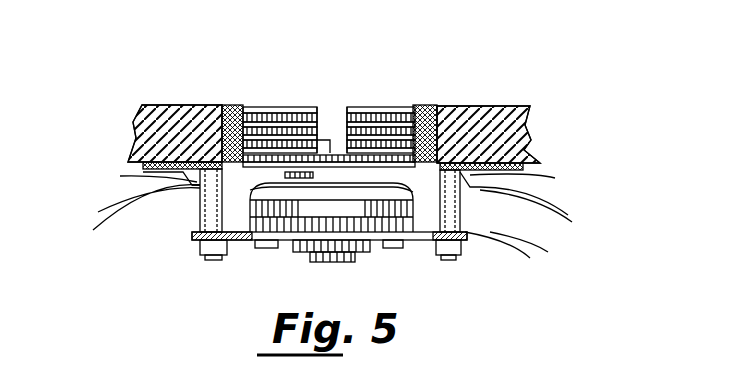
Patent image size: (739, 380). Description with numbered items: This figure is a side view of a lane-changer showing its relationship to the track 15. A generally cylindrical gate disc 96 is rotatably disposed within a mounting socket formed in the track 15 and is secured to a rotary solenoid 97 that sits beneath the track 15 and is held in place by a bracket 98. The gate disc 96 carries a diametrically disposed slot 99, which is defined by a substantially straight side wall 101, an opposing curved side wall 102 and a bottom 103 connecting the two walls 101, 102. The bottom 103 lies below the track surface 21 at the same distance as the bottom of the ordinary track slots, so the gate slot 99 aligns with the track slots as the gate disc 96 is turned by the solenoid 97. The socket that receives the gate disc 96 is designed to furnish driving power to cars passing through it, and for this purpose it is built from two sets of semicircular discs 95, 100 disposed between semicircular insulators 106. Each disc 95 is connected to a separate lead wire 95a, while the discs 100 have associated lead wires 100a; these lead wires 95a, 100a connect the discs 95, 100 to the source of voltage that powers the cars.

The track 15 is at (130, 117).
The track surface 21 is at (496, 104).
The semicircular discs 95 is at (229, 104).
The lead wire 95a is at (96, 228).
The gate disc 96 is at (282, 102).
The rotary solenoid 97 is at (198, 222).
The bracket 98 is at (243, 246).
The slot 99 is at (336, 99).
The semicircular discs 100 is at (425, 103).
The lead wires 100a is at (578, 226).
The straight side wall 101 is at (322, 117).
The curved side wall 102 is at (341, 116).
The bottom 103 is at (340, 163).
The semicircular insulators 106 is at (221, 118).